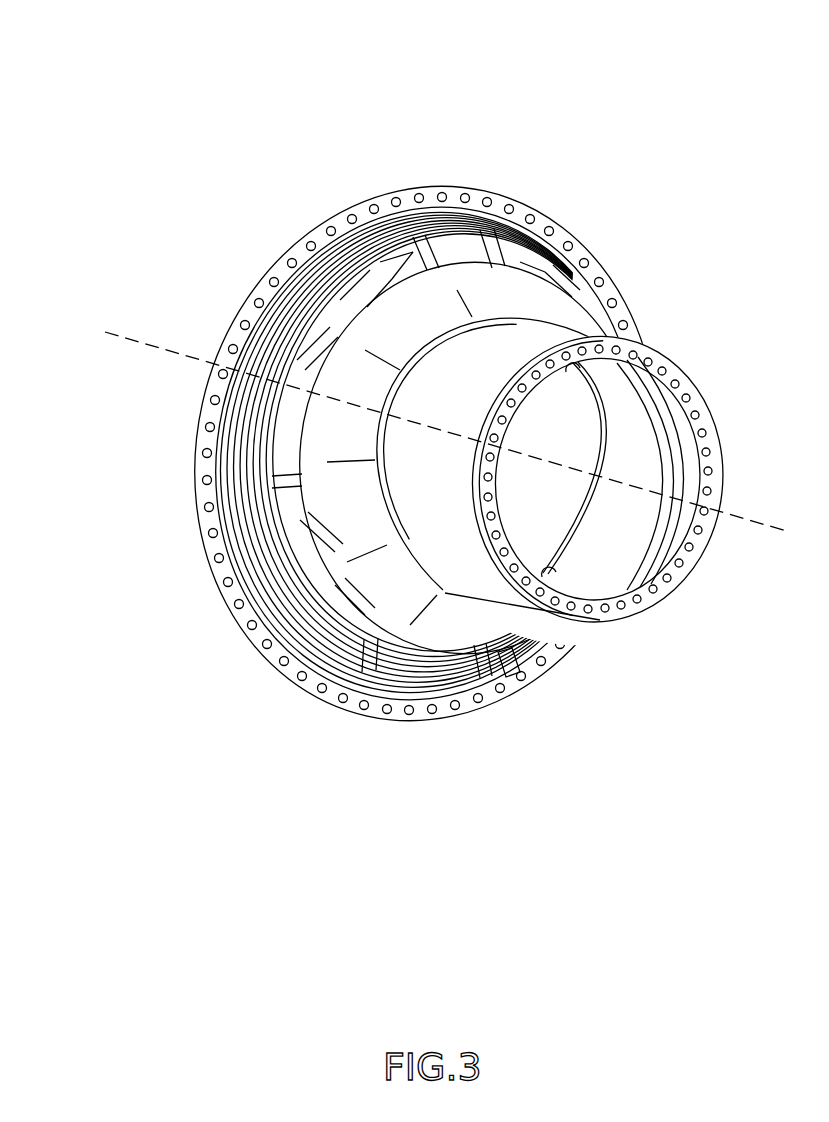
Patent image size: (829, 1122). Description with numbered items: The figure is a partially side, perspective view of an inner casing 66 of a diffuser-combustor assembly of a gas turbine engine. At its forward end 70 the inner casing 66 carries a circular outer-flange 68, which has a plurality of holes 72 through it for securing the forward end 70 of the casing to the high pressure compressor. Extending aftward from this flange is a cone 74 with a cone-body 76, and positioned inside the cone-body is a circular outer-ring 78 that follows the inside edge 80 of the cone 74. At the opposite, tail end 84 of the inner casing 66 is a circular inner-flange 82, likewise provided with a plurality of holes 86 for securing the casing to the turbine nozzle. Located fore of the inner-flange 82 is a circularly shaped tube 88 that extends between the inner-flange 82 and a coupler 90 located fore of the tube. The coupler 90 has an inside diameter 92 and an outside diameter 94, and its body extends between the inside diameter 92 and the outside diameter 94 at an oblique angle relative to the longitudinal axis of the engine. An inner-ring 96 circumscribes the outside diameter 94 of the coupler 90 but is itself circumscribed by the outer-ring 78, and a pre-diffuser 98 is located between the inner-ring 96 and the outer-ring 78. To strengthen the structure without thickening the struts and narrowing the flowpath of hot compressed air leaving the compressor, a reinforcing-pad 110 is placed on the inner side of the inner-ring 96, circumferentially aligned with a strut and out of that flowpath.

The inner casing 66 is at (634, 106).
The outer-flange 68 is at (345, 215).
The forward end 70 is at (240, 310).
The holes 72 is at (567, 237).
The cone 74 is at (318, 270).
The cone-body 76 is at (378, 206).
The inner-ring 96 is at (425, 200).
The outside diameter 94 is at (303, 670).
The inside edge 80 is at (280, 528).
The pre-diffuser 98 is at (588, 284).
The reinforcing-pad 110 is at (293, 478).
The outer-ring 78 is at (519, 680).
The coupler 90 is at (383, 396).
The tube 88 is at (487, 205).
The inside diameter 92 is at (450, 597).
The tail end 84 is at (690, 389).
The holes 86 is at (663, 372).
The inner-flange 82 is at (642, 598).